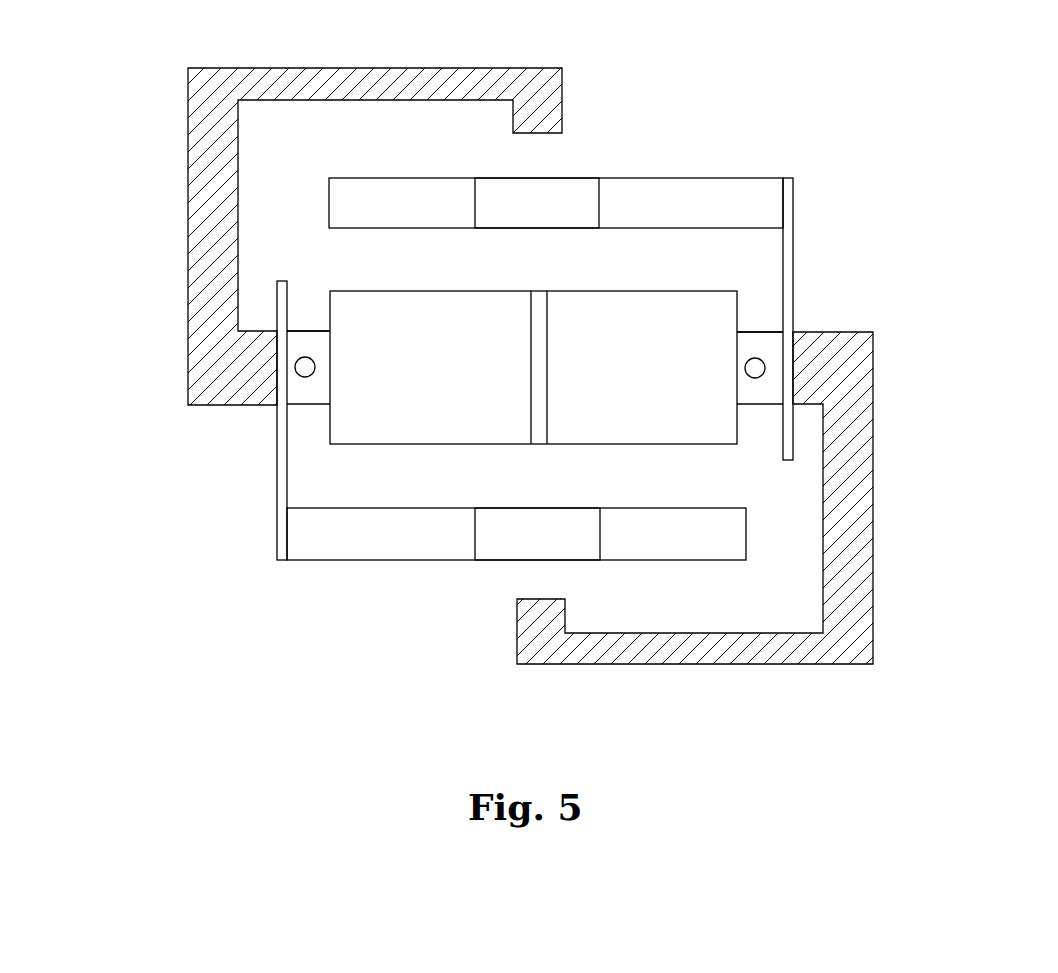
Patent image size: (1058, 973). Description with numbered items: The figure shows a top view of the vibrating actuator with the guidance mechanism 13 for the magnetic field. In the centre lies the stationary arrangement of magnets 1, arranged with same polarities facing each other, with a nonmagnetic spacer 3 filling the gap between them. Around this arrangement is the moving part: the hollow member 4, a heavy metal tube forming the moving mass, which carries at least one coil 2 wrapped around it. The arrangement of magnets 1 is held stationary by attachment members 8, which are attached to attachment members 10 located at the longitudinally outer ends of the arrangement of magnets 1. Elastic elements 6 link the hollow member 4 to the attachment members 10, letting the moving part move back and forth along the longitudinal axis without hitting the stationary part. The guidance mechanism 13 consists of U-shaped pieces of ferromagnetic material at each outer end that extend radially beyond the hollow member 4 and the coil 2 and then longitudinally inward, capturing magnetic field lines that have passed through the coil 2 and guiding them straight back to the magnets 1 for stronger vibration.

The magnets 1 is at (680, 353).
The coil 2 is at (553, 202).
The spacer 3 is at (537, 323).
The hollow member 4 is at (745, 202).
The elastic elements 6 is at (793, 328).
The attachment members 8 is at (305, 377).
The attachment members 10 is at (317, 343).
The guidance mechanism 13 is at (188, 202).